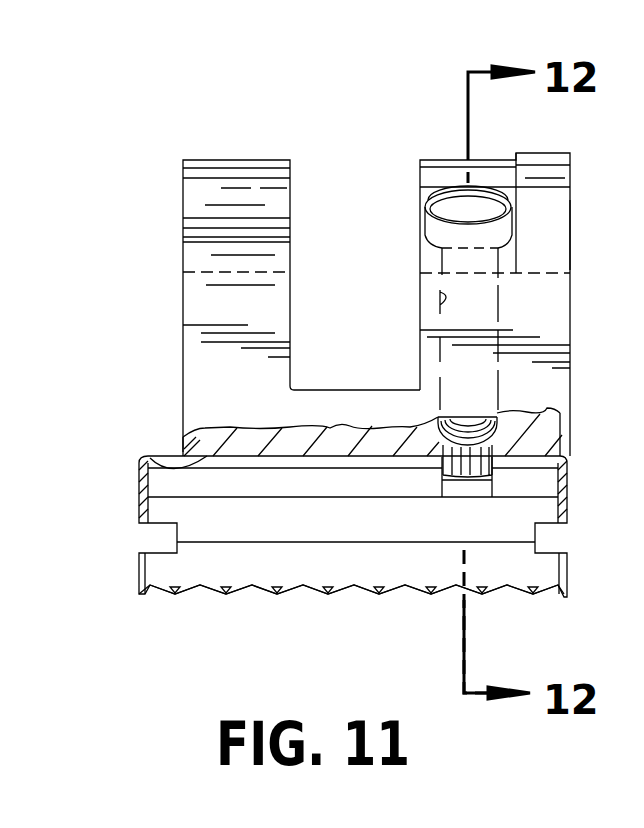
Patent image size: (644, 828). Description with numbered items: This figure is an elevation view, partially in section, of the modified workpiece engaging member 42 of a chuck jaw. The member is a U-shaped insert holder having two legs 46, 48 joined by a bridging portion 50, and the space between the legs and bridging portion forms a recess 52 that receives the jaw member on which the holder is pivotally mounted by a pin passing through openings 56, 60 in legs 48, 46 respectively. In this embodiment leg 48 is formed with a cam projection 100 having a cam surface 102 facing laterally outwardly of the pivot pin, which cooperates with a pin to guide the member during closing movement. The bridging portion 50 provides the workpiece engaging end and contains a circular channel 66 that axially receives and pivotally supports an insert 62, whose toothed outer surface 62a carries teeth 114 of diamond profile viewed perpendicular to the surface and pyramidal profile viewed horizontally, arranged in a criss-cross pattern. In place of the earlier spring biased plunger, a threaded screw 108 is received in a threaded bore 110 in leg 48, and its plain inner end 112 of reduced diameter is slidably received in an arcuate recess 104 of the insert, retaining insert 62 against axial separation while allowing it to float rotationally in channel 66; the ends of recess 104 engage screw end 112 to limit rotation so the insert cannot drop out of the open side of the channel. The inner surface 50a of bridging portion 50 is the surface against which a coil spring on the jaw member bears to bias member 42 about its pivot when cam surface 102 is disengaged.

The workpiece engaging member 42 is at (118, 494).
The leg 46 is at (216, 302).
The leg 48 is at (430, 317).
The bridging portion 50 is at (220, 438).
The inner surface of bridging portion 50a is at (325, 388).
The recess 52 is at (343, 185).
The opening 56 is at (442, 273).
The opening 60 is at (213, 189).
The insert 62 is at (258, 552).
The toothed outer surface 62a is at (175, 577).
The circular channel 66 is at (143, 457).
The cam projection 100 is at (538, 167).
The cam surface 102 is at (547, 230).
The arcuate recess 104 is at (463, 488).
The threaded screw 108 is at (438, 420).
The threaded bore 110 is at (430, 287).
The plain inner end 112 is at (458, 463).
The teeth 114 is at (333, 596).